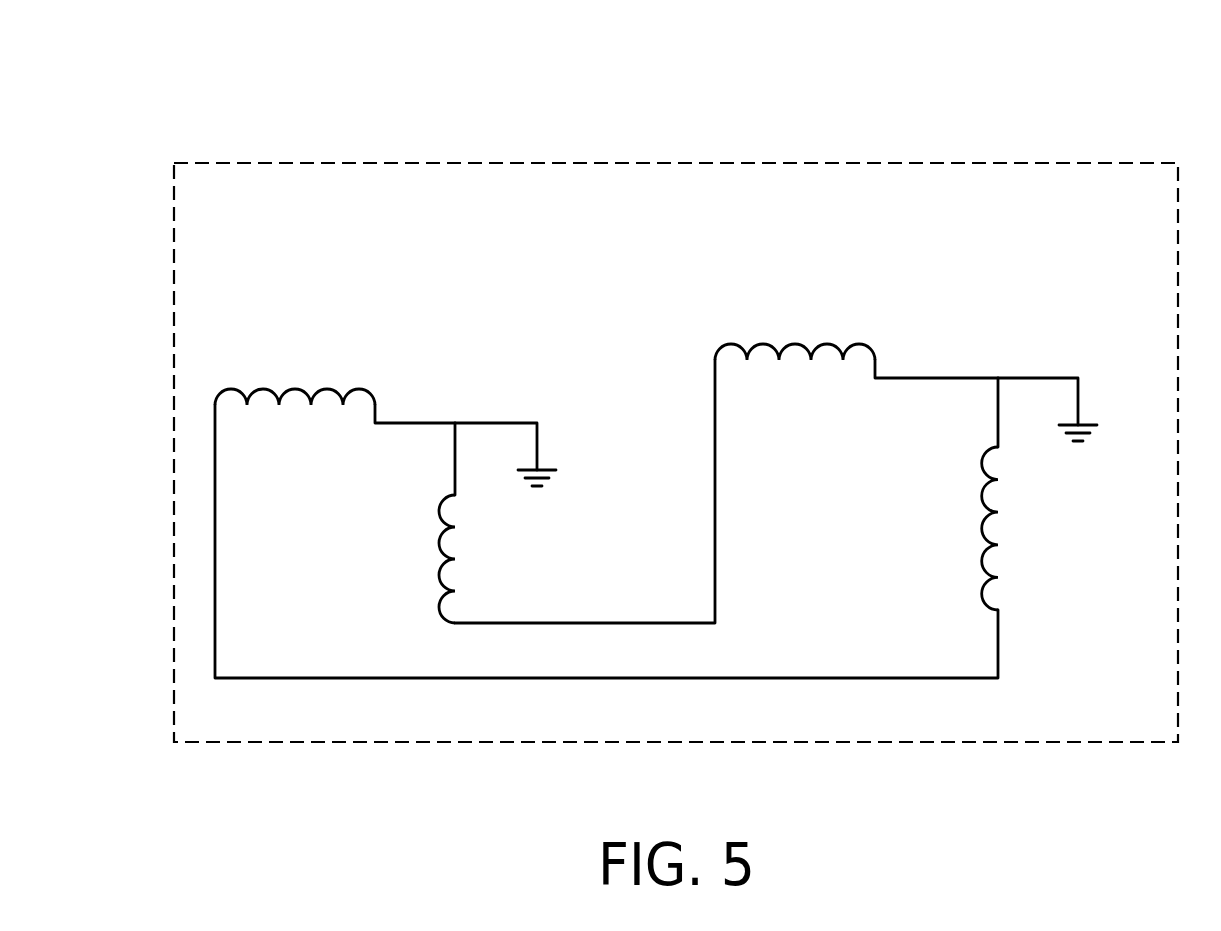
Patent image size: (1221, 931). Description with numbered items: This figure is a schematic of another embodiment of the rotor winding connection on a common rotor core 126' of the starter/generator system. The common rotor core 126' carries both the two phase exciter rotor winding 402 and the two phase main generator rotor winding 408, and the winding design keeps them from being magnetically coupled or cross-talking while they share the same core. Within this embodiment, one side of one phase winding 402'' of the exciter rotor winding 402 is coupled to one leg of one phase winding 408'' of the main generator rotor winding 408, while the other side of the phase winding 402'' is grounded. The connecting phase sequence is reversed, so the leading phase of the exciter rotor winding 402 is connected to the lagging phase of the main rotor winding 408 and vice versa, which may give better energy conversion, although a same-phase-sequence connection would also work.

The common rotor core 126' is at (676, 383).
The exciter rotor winding 402 is at (331, 480).
The phase winding of exciter rotor winding 402'' is at (295, 356).
The main generator rotor winding 408 is at (919, 425).
The phase winding of main generator rotor winding 408'' is at (1057, 528).